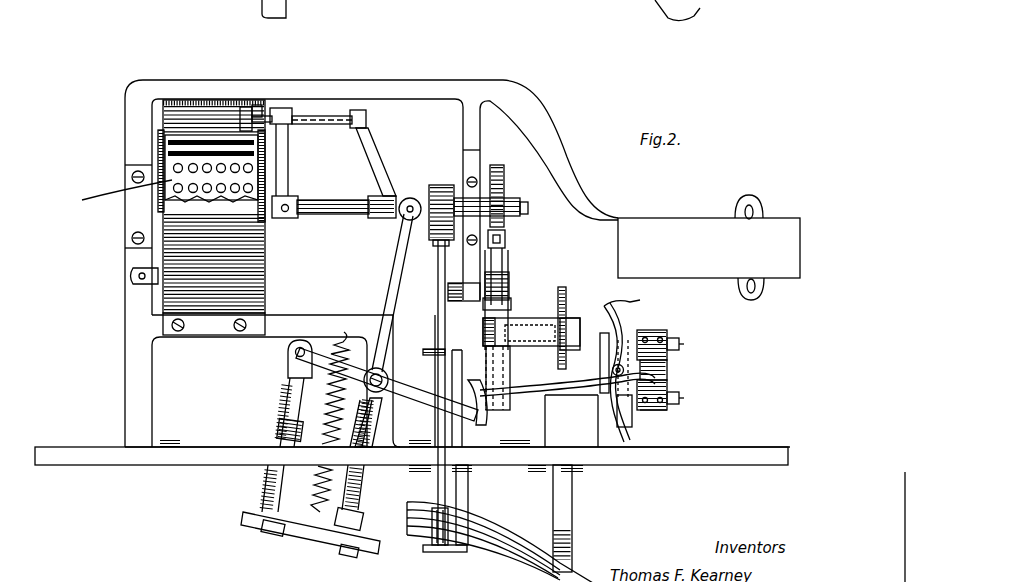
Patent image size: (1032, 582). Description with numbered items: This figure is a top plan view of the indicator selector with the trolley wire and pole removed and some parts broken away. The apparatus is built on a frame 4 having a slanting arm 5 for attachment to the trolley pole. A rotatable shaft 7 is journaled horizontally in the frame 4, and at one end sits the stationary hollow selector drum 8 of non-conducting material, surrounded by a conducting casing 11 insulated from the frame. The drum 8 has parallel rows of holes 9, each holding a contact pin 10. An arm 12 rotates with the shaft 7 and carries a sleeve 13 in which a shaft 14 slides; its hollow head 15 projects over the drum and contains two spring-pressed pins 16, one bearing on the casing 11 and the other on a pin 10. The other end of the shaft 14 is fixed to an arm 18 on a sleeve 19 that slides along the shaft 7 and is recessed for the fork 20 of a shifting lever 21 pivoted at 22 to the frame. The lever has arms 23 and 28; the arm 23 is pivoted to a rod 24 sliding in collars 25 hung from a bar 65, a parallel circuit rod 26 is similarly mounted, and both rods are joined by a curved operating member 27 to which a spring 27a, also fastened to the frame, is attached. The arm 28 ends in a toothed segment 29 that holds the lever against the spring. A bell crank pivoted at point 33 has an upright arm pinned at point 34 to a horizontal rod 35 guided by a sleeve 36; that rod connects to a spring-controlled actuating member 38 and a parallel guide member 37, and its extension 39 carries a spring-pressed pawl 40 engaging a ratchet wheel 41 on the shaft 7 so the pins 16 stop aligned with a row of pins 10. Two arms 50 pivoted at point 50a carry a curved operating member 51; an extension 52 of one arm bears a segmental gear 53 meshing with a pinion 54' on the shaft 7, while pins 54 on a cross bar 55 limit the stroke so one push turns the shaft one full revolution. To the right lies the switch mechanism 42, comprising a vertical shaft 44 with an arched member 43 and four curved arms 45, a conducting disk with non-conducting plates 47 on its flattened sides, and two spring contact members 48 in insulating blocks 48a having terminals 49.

The frame 4 is at (433, 80).
The slanting arm 5 is at (686, 218).
The rotatable shaft 7 is at (340, 216).
The selector drum 8 is at (163, 176).
The holes 9 is at (190, 192).
The contact pins 10 is at (223, 192).
The casing 11 is at (180, 100).
The arm 12 is at (290, 152).
The sleeve 13 is at (290, 120).
The shaft 14 is at (331, 125).
The hollow head 15 is at (244, 116).
The pins 16 is at (258, 104).
The arm 18 is at (376, 162).
The sleeve 19 is at (378, 220).
The fork 20 is at (412, 198).
The shifting lever 21 is at (396, 313).
The pivot 22 is at (389, 379).
The arm 23 is at (308, 342).
The rod 24 is at (285, 382).
The collars 25 is at (262, 490).
The circuit rod 26 is at (365, 493).
The curved operating member 27 is at (318, 533).
The spring 27a is at (347, 338).
The arm 28 is at (421, 398).
The segment 29 is at (488, 422).
The pivot point 33 is at (508, 282).
The point 34 is at (510, 292).
The horizontal rod 35 is at (512, 305).
The sleeve 36 is at (488, 336).
The guide member 37 is at (566, 304).
The actuating member 38 is at (506, 396).
The extension 39 is at (512, 212).
The pawl 40 is at (506, 242).
The ratchet wheel 41 is at (498, 166).
The switch mechanism 42 is at (668, 392).
The arched member 43 is at (626, 408).
The vertical shaft 44 is at (608, 382).
The curved arms 45 is at (620, 320).
The non-conducting plates 47 is at (604, 362).
The spring contact members 48 is at (650, 332).
The insulating blocks 48a is at (662, 412).
The terminals 49 is at (680, 342).
The arms 50 is at (560, 490).
The pivot point 50a is at (580, 472).
The curved operating member 51 is at (512, 538).
The extension 52 is at (438, 338).
The segmental gear 53 is at (436, 244).
The pins 54 is at (447, 447).
The pinion 54' is at (442, 195).
The cross bar 55 is at (470, 492).
The bar 65 is at (150, 456).